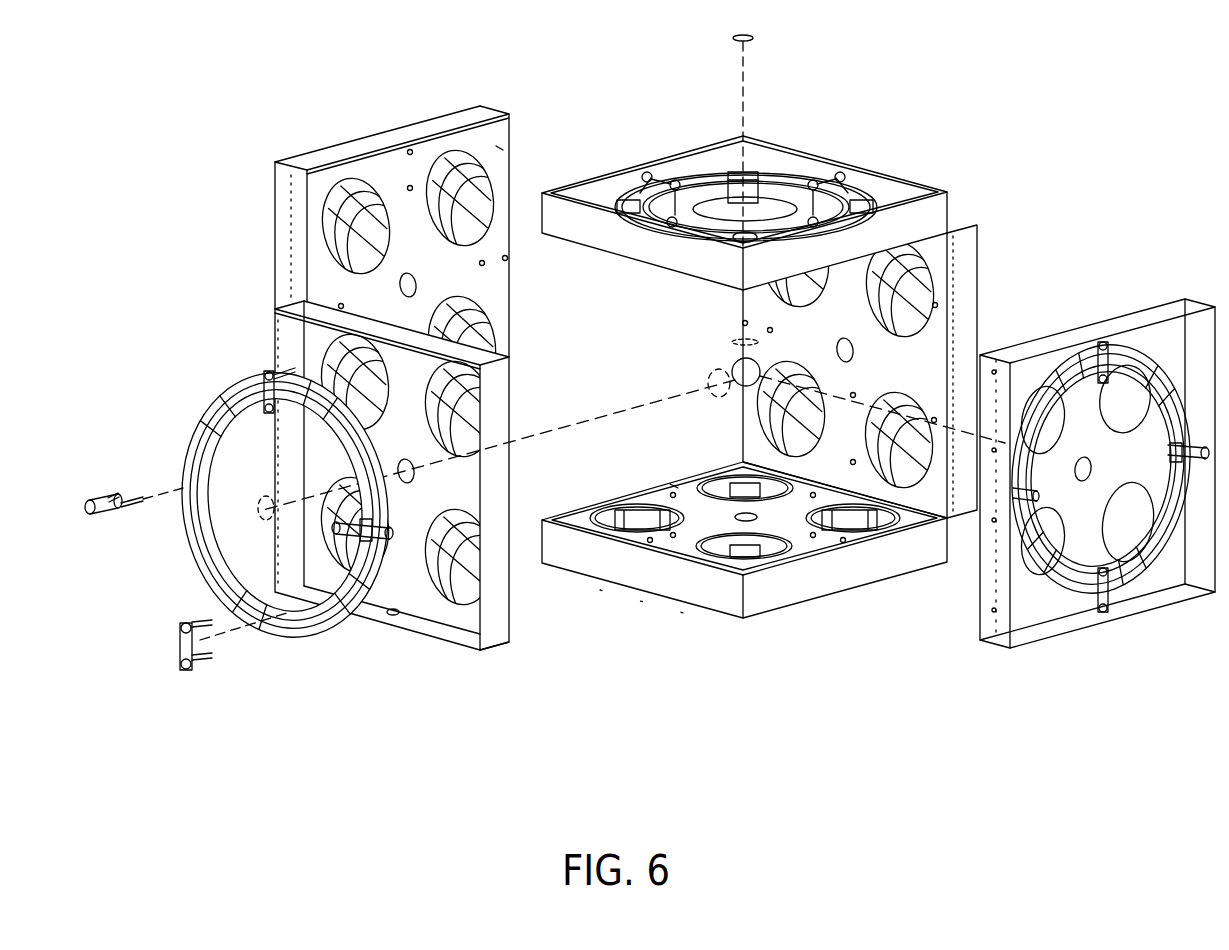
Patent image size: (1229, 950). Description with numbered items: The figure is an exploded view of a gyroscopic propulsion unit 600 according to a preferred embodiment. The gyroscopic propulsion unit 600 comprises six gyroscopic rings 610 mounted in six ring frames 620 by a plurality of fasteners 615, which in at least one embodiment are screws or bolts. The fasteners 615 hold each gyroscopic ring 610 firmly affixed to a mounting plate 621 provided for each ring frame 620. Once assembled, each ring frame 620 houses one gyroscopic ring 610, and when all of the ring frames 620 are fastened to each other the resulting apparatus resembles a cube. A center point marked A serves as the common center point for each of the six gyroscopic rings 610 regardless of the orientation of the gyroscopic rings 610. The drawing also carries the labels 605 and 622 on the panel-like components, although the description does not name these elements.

The gyroscopic propulsion unit 600 is at (200, 108).
The panel 605 is at (248, 226).
The gyroscopic ring 610 is at (949, 232).
The fastener 615 is at (107, 493).
The ring frame 620 is at (431, 117).
The mounting plate 621 is at (499, 144).
The panel corner 622 is at (506, 261).